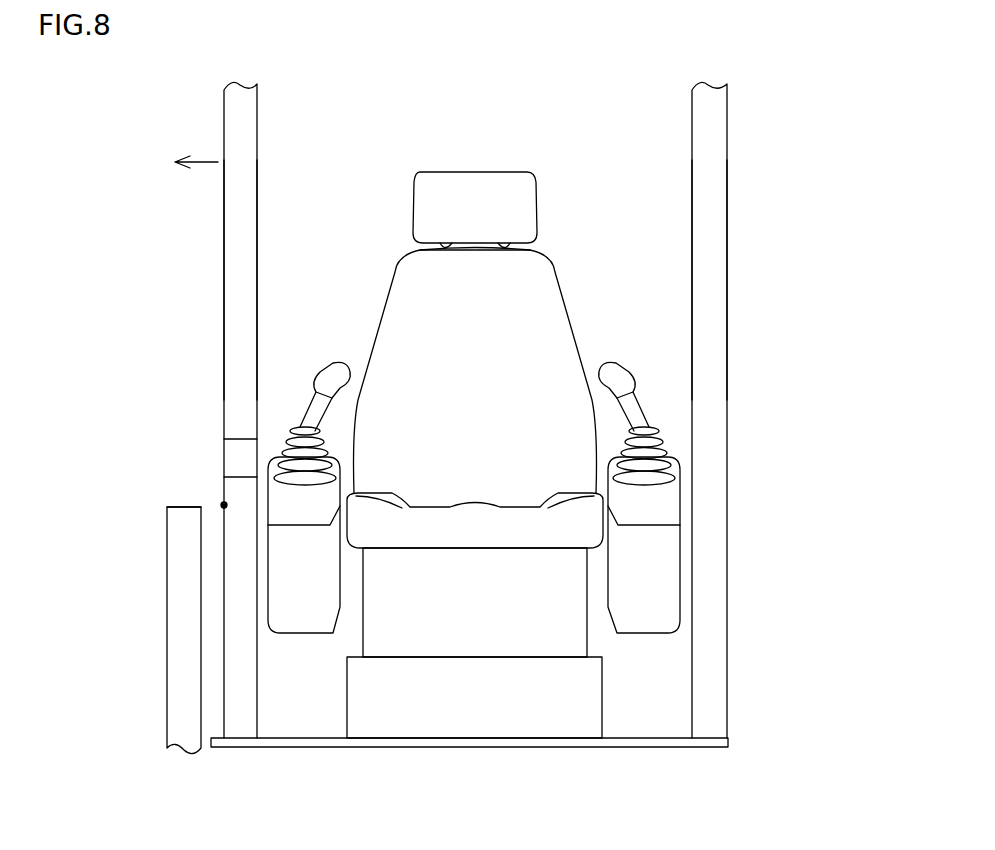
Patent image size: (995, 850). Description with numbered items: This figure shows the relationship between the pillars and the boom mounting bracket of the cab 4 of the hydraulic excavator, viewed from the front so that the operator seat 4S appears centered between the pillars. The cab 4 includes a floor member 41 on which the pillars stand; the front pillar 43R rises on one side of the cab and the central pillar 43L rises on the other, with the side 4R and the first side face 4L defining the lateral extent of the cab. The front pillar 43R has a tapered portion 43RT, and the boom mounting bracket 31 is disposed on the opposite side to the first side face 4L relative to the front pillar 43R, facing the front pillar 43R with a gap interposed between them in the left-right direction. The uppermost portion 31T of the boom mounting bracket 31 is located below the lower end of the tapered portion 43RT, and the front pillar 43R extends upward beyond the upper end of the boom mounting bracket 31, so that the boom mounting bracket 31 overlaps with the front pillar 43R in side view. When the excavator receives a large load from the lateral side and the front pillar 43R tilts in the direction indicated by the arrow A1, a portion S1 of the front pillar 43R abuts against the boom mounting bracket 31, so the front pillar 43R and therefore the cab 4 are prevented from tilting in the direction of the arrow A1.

The cab 4 is at (815, 104).
The operator seat 4S is at (475, 183).
The right pillar 4R is at (224, 307).
The first side face 4L is at (727, 327).
The front pillar 43R is at (231, 238).
The central pillar 43L is at (718, 234).
The tapered portion 43RT is at (240, 450).
The floor member 41 is at (275, 747).
The boom mounting bracket 31 is at (185, 518).
The uppermost portion 31T is at (182, 509).
The portion S1 is at (224, 505).
The arrow A1 is at (189, 152).